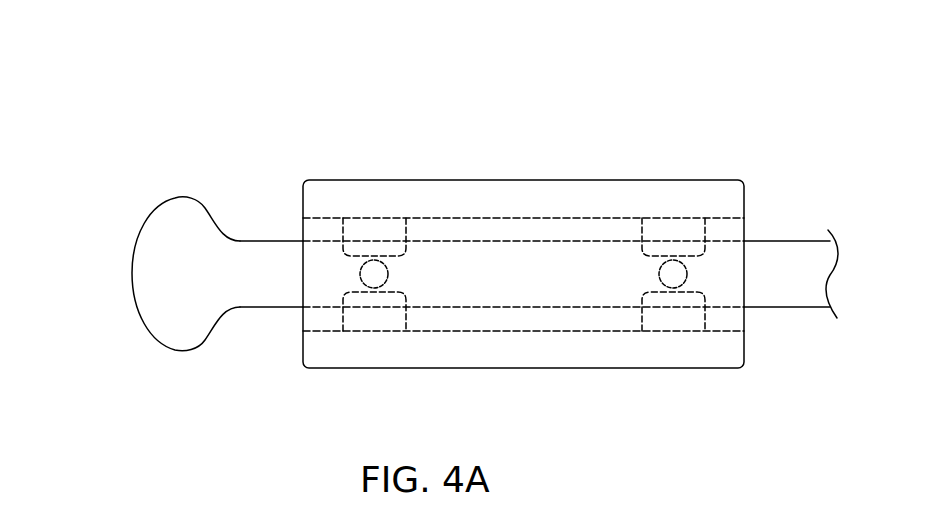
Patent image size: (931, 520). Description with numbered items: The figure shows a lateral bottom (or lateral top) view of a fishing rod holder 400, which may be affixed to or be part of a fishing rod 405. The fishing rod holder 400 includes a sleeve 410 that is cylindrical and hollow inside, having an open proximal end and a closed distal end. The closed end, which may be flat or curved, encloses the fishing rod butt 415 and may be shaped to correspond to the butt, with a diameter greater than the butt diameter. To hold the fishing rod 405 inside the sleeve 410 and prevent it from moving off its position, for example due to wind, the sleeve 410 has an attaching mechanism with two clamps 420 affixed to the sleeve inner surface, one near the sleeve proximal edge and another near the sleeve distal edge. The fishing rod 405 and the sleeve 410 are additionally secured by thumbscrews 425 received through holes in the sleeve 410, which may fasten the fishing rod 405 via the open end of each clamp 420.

The fishing rod holder 400 is at (213, 98).
The fishing rod 405 is at (250, 241).
The sleeve 410 is at (526, 180).
The fishing rod butt 415 is at (160, 274).
The clamp 420 is at (373, 237).
The thumbscrew 425 is at (373, 273).